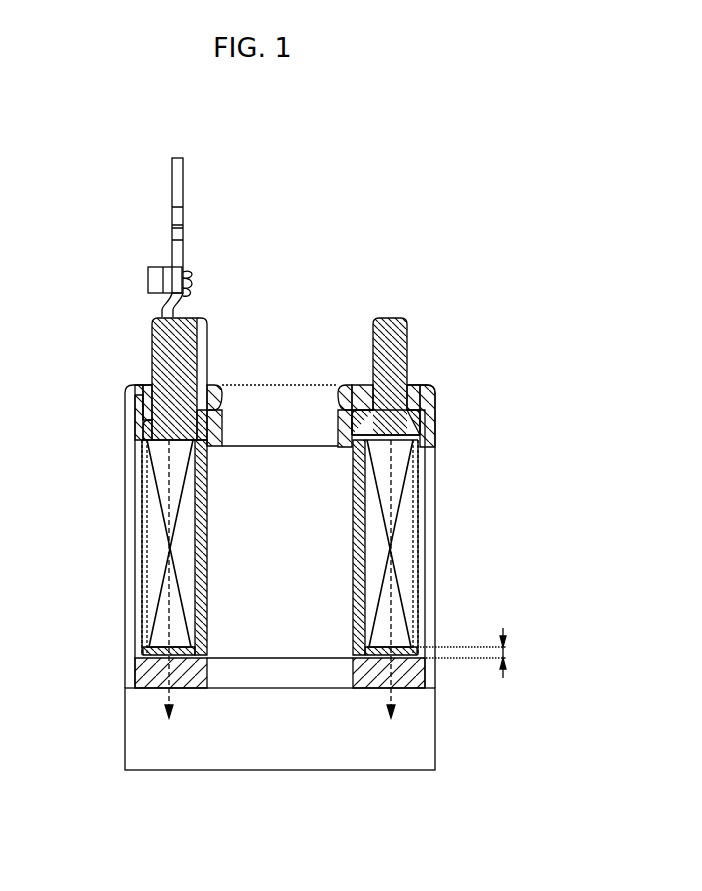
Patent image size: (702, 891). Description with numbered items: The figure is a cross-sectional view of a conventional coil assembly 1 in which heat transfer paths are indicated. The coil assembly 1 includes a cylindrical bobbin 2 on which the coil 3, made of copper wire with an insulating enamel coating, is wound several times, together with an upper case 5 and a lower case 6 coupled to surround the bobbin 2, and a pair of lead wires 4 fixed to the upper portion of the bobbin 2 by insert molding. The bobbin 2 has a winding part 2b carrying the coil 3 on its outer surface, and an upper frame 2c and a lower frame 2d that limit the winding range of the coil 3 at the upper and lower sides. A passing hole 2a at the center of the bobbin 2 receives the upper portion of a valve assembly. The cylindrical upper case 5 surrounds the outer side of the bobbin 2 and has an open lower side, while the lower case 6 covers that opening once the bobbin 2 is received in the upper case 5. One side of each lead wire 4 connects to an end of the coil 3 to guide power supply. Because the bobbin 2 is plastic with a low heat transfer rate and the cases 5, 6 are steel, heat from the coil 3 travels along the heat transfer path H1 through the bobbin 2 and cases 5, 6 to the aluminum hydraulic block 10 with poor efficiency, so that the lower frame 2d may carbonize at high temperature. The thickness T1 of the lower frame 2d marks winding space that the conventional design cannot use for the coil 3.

The coil assembly 1 is at (127, 383).
The bobbin 2 is at (199, 317).
The passing hole 2a is at (217, 486).
The winding part 2b is at (200, 512).
The upper frame 2c is at (166, 425).
The lower frame 2d is at (142, 652).
The coil 3 is at (150, 540).
The lead wire 4 is at (172, 262).
The upper case 5 is at (130, 596).
The lower case 6 is at (148, 668).
The hydraulic block 10 is at (140, 738).
The heat transfer path H1 is at (392, 603).
The thickness of the lower frame T1 is at (475, 653).